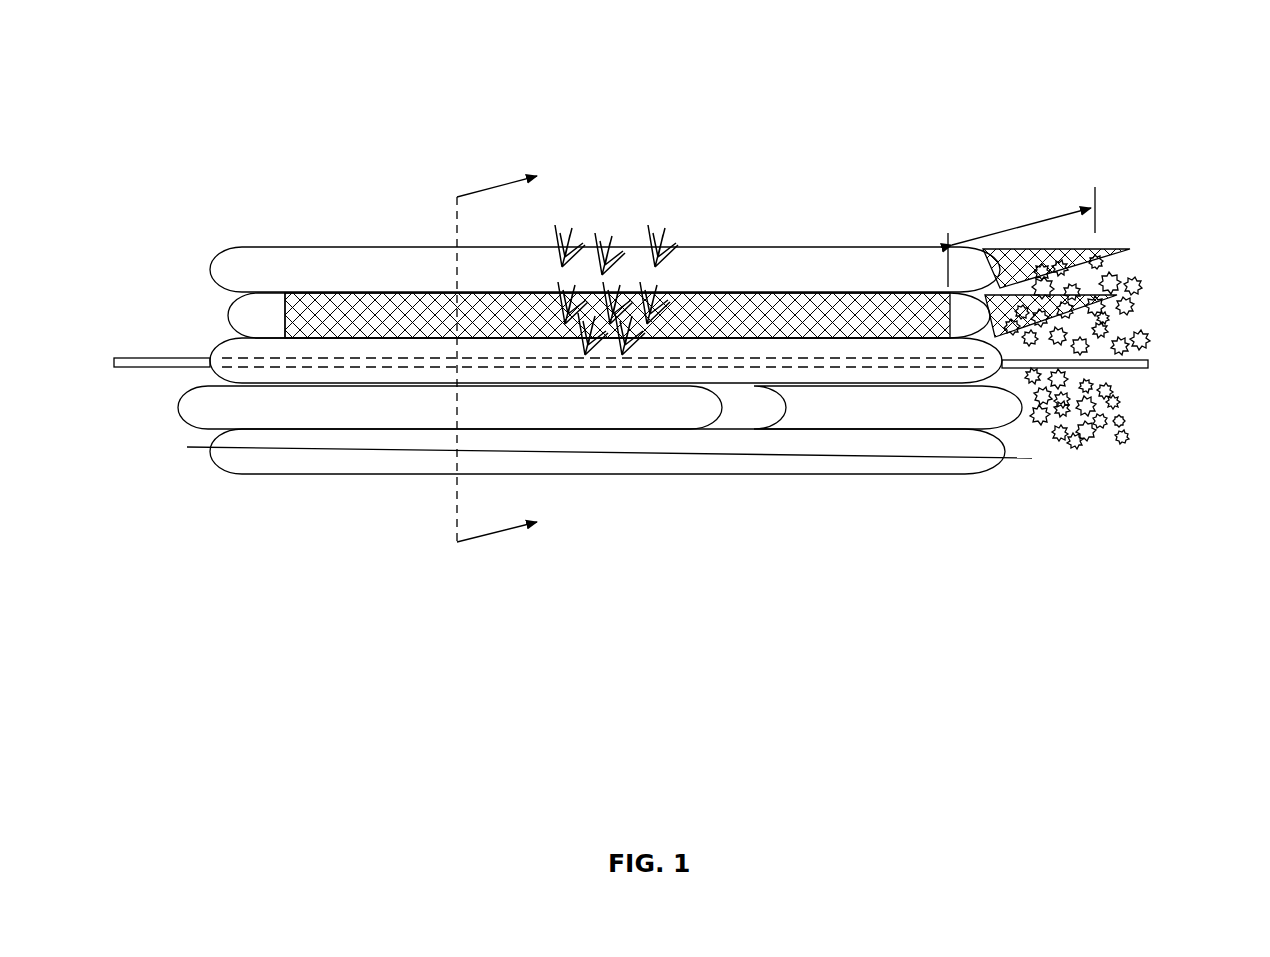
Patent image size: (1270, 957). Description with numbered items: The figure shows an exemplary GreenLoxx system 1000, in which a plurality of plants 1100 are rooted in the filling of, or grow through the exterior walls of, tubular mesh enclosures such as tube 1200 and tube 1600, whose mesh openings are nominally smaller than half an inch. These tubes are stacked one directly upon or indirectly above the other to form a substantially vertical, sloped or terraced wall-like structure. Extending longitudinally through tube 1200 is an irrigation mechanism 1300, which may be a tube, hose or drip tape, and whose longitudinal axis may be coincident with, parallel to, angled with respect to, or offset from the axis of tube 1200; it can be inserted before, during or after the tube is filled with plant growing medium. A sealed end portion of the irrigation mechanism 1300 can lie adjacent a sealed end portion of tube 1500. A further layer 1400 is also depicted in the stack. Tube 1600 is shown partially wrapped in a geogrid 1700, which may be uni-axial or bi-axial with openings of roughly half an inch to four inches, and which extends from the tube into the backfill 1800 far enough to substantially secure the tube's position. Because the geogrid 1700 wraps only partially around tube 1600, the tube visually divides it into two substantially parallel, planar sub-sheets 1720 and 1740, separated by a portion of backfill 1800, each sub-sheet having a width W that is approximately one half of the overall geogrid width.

The GreenLoxx system 1000 is at (582, 69).
The plants 1100 is at (597, 232).
The tubular mesh enclosure 1200 is at (683, 345).
The irrigation mechanism 1300 is at (695, 408).
The core layer with tubing 1400 is at (837, 360).
The tube 1500 is at (903, 408).
The tubular mesh enclosure 1600 is at (995, 428).
The geogrid 1700 is at (1172, 235).
The sub-sheet 1720 is at (1117, 262).
The sub-sheet 1740 is at (1017, 303).
The backfill 1800 is at (1158, 350).